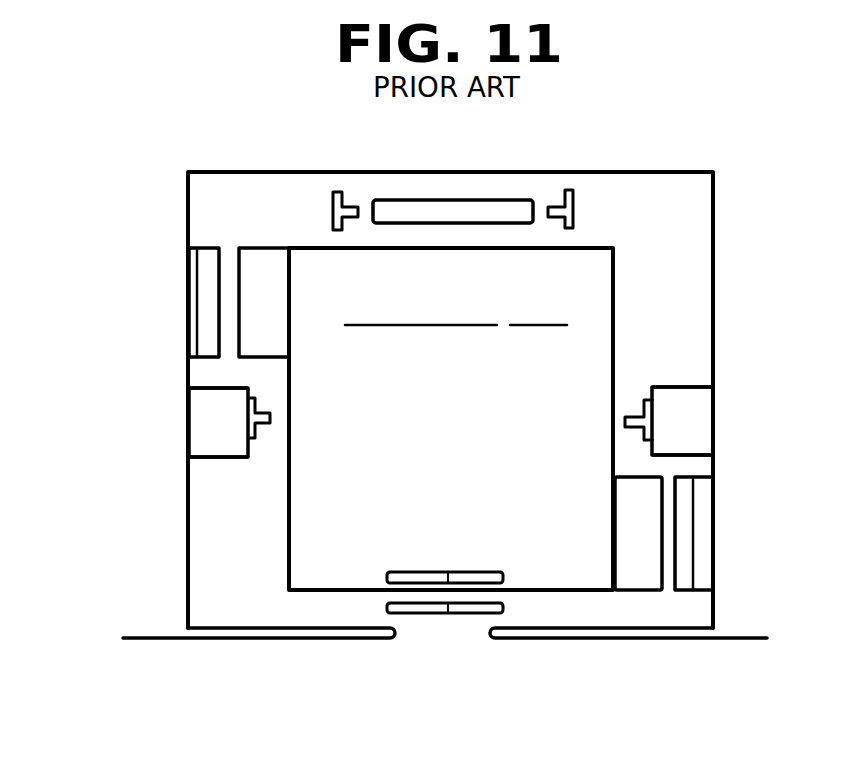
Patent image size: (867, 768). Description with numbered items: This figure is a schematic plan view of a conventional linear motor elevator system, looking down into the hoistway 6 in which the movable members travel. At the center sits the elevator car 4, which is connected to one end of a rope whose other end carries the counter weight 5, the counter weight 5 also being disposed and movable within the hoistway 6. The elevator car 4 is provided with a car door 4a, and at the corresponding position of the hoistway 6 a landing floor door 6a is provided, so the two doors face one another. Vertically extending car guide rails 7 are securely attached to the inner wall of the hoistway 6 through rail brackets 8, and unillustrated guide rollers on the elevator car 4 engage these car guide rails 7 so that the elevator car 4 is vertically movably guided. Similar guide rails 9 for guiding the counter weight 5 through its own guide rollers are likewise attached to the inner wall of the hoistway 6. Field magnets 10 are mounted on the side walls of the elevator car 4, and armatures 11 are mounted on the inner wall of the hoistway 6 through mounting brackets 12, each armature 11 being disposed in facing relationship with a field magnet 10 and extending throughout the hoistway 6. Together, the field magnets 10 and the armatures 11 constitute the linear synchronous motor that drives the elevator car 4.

The elevator car 4 is at (305, 593).
The car door 4a is at (500, 573).
The counter weight 5 is at (500, 200).
The hoistway 6 is at (713, 283).
The landing floor door 6a is at (465, 613).
The car guide rails 7 is at (248, 432).
The rail brackets 8 is at (218, 457).
The guide rails 9 is at (565, 190).
The field magnets 10 is at (261, 256).
The armatures 11 is at (203, 249).
The mounting brackets 12 is at (192, 320).